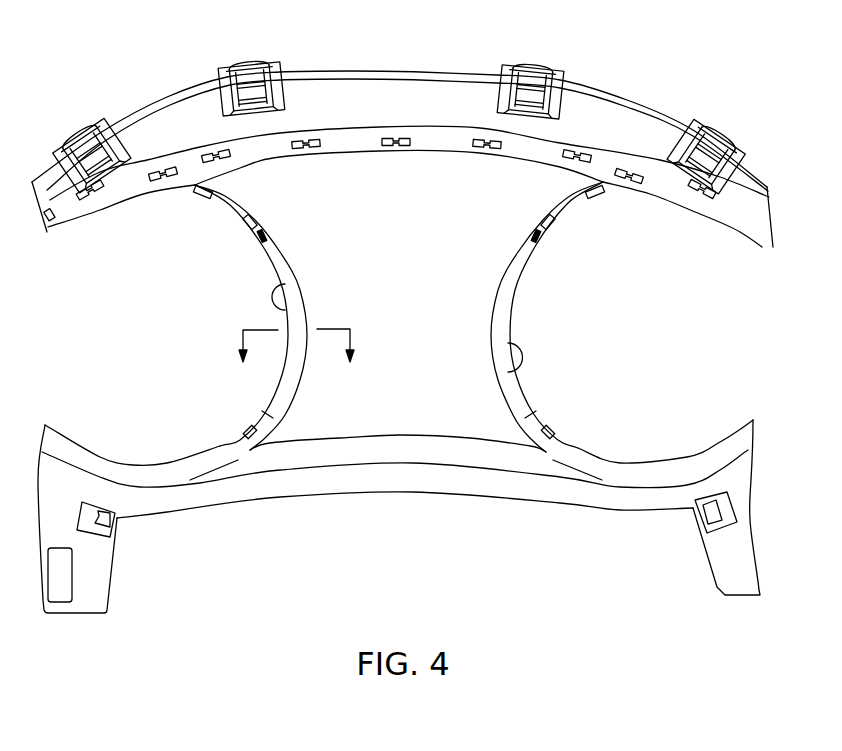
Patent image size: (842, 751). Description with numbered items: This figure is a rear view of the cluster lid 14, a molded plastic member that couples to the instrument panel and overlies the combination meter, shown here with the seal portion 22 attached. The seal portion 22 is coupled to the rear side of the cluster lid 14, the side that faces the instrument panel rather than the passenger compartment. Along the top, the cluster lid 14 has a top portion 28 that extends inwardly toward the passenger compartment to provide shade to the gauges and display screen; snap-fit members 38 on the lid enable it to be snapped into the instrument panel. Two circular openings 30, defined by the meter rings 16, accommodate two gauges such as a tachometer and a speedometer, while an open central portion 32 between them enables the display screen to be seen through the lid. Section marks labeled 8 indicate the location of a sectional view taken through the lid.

The cluster lid 14 is at (368, 64).
The top portion 28 is at (422, 71).
The snap-fit members 38 is at (73, 132).
The open central portion 32 is at (347, 175).
The seal portion 22 is at (287, 248).
The circular openings 30 is at (280, 288).
The section line 8- 8 is at (296, 360).
The meter rings 16 is at (167, 462).